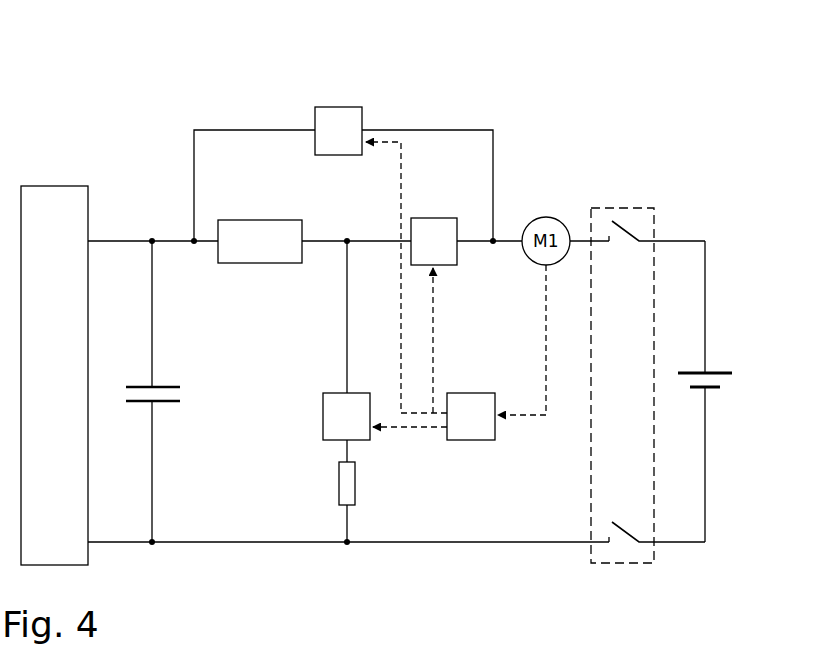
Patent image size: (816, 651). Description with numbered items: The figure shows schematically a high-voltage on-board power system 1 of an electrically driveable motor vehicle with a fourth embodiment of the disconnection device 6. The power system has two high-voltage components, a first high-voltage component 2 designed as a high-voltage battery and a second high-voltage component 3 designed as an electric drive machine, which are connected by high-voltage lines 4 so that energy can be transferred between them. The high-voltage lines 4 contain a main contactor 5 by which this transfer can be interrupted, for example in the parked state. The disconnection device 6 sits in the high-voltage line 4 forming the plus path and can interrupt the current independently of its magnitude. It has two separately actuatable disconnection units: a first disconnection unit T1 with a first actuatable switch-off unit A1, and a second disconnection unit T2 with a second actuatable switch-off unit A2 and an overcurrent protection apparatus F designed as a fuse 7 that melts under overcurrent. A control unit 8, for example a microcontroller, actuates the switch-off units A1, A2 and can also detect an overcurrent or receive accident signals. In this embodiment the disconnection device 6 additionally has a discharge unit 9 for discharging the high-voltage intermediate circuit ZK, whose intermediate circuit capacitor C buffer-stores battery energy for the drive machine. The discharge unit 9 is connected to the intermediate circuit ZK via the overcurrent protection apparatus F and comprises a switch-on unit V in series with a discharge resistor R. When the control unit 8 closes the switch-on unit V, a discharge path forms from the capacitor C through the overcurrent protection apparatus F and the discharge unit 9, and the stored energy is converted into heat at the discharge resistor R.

The high-voltage on-board power system 1 is at (714, 210).
The first high-voltage component 2 is at (722, 373).
The second high-voltage component 3 is at (51, 186).
The high-voltage lines 4 is at (674, 241).
The main contactor 5 is at (605, 208).
The disconnection device 6 is at (477, 110).
The fuse 7 is at (260, 265).
The control unit 8 is at (472, 441).
The discharge unit 9 is at (300, 428).
The high-voltage intermediate circuit ZK is at (148, 212).
The intermediate circuit capacitor C is at (165, 385).
The overcurrent protection apparatus F is at (208, 262).
The second disconnection unit T2 is at (322, 100).
The second actuatable switch-off unit A2 is at (346, 107).
The first disconnection unit T1 is at (432, 208).
The first actuatable switch-off unit A1 is at (447, 218).
The switch-on unit V is at (328, 385).
The discharge resistor R is at (338, 482).